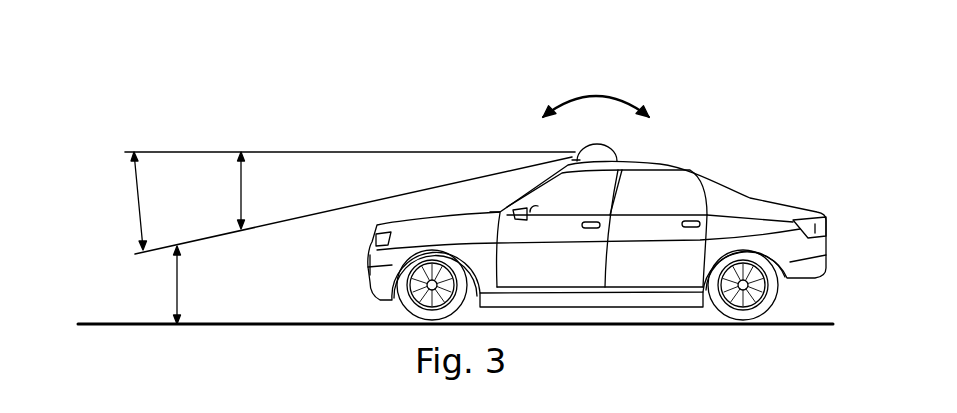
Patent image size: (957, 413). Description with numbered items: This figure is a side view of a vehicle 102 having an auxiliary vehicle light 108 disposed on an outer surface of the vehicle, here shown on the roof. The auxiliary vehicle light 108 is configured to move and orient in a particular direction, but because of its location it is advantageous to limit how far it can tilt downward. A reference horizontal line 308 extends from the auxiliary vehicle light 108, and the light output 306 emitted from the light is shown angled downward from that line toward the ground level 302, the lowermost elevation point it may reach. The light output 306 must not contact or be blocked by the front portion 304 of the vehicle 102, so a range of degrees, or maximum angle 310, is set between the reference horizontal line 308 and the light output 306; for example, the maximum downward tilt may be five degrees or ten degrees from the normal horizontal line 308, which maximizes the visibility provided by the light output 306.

The vehicle 102 is at (722, 180).
The auxiliary vehicle light 108 is at (618, 158).
The ground level 302 is at (281, 322).
The front portion of vehicle 304 is at (369, 260).
The light output 306 is at (575, 158).
The reference horizontal line 308 is at (313, 150).
The maximum angle 310 is at (132, 200).